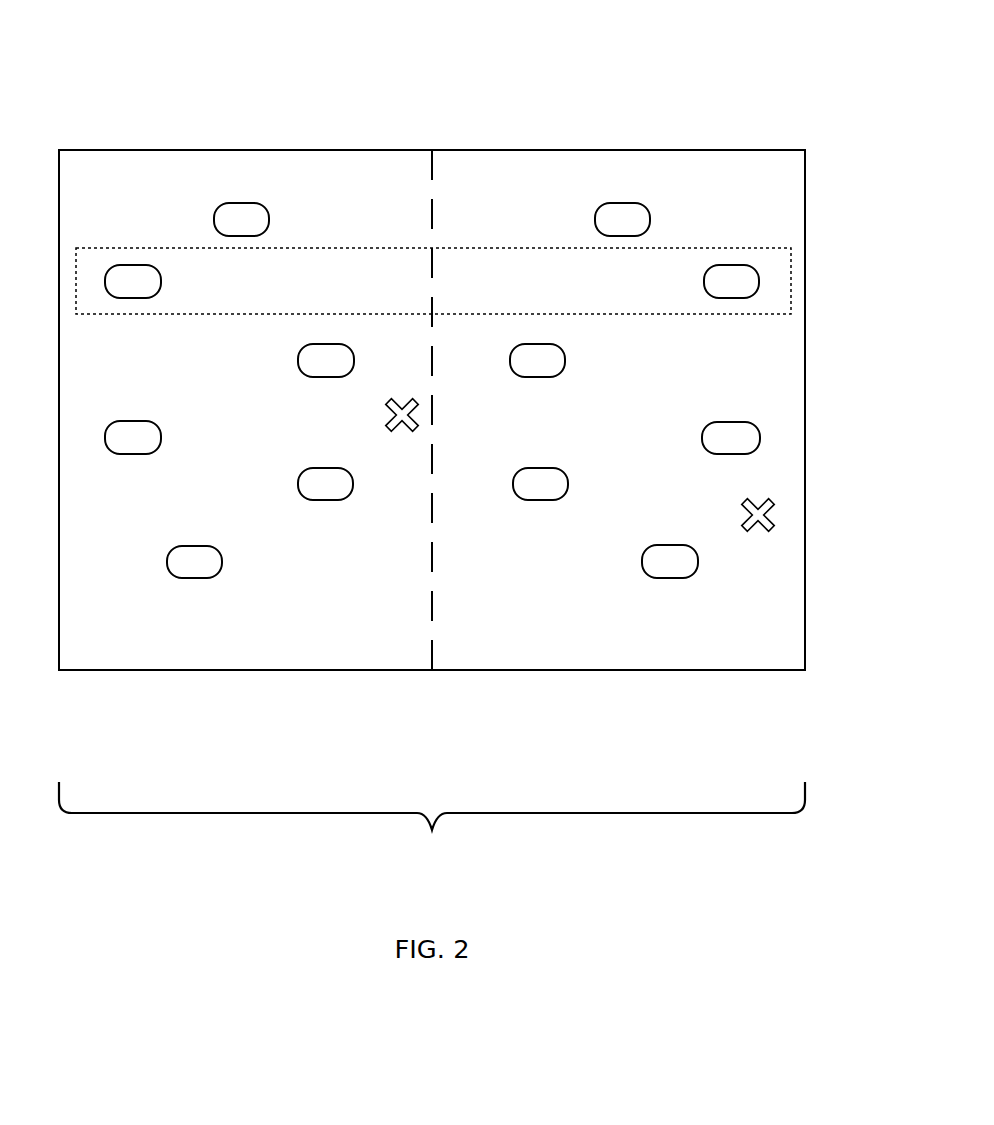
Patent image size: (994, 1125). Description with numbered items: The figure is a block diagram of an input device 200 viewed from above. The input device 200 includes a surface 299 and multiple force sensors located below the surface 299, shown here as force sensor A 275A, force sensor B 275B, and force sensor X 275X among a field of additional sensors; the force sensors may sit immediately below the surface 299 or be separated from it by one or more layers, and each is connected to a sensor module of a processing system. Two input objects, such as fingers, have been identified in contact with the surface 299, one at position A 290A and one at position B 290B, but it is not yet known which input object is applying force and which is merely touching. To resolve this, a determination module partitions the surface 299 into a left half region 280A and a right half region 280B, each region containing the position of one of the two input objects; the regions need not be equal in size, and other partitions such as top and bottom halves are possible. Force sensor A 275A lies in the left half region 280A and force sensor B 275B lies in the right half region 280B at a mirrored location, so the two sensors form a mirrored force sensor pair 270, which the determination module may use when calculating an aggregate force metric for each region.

The input device 200 is at (432, 846).
The mirrored force sensor pair 270 is at (385, 283).
The force sensor A 275A is at (133, 283).
The force sensor B 275B is at (731, 283).
The force sensor X 275X is at (198, 562).
The left half region 280A is at (327, 647).
The right half region 280B is at (553, 647).
The position A 290A is at (393, 388).
The position B 290B is at (735, 490).
The surface 299 is at (580, 670).